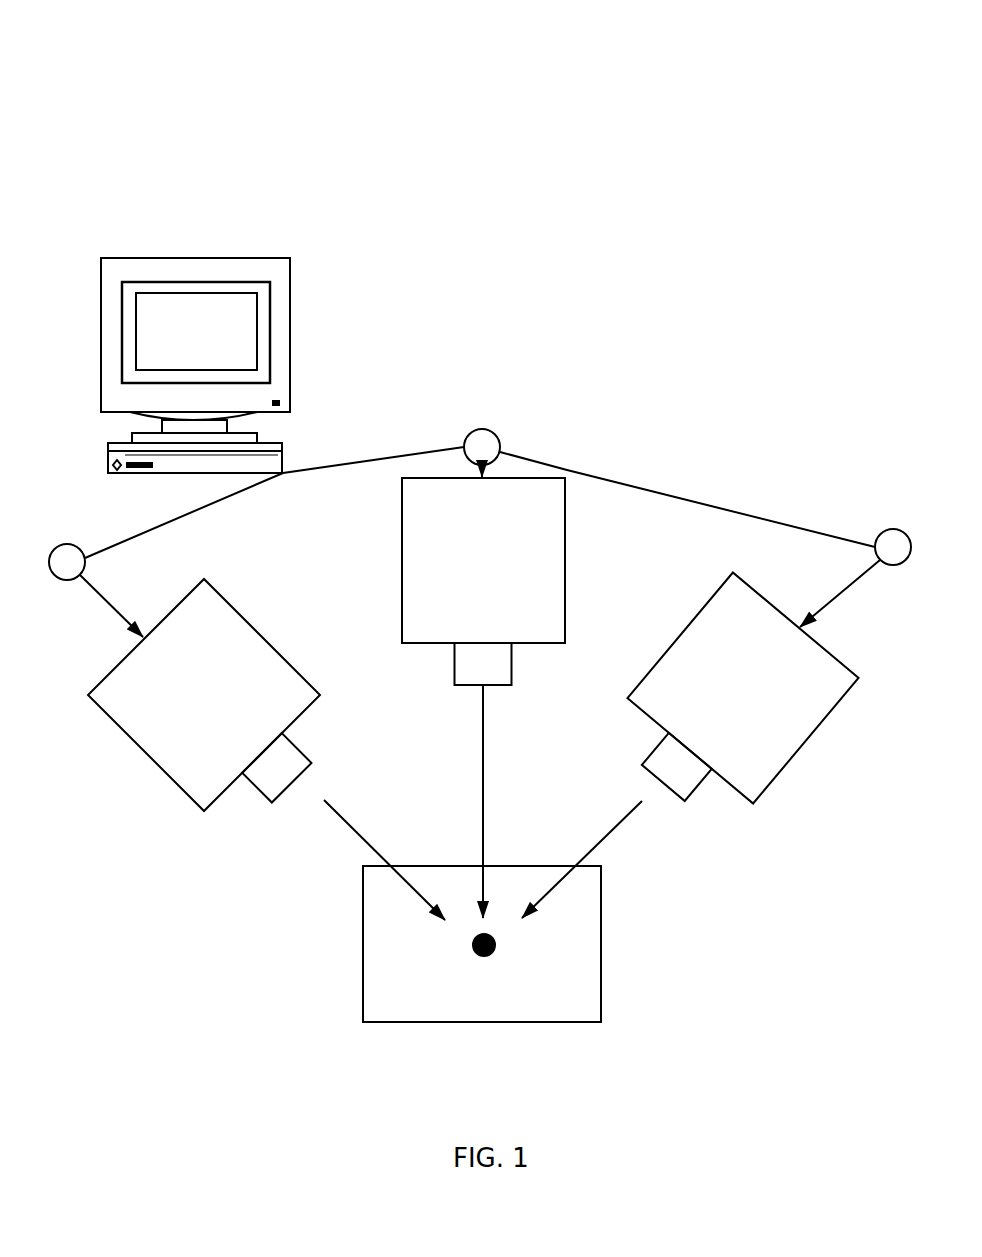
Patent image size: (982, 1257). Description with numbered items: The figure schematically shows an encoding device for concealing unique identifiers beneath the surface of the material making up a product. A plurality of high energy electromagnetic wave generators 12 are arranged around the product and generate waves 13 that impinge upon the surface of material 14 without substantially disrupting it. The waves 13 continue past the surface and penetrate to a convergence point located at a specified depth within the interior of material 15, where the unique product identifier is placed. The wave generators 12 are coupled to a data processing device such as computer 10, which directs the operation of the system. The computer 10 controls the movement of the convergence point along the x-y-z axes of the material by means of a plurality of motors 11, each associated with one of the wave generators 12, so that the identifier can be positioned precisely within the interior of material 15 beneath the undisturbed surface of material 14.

The computer 10 is at (206, 256).
The motors 11 is at (482, 428).
The high energy electromagnetic wave generators 12 is at (566, 472).
The waves 13 is at (412, 897).
The surface of material 14 is at (365, 942).
The interior of material 15 is at (504, 936).